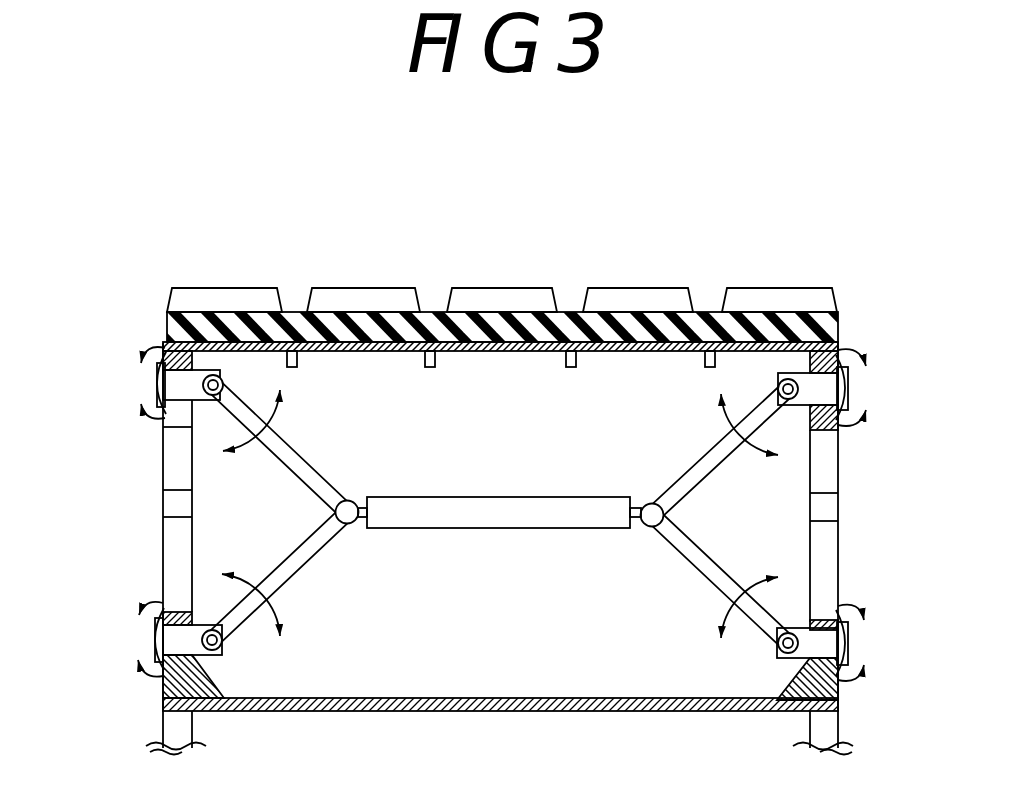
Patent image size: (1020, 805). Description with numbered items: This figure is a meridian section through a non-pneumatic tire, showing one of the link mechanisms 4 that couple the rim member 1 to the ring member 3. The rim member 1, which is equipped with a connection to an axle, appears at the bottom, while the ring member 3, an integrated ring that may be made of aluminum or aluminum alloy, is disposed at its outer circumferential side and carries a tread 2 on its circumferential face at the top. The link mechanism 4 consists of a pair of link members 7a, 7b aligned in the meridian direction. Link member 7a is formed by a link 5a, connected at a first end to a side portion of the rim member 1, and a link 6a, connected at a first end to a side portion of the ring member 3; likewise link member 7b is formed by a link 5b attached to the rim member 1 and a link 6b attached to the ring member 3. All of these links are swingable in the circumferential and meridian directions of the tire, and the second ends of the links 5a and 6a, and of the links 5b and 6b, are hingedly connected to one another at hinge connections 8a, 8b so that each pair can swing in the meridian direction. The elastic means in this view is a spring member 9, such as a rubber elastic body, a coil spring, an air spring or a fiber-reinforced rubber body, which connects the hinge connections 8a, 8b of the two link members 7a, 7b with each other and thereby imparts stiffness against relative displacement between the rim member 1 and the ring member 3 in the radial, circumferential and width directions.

The rim member 1 is at (162, 724).
The tread 2 is at (502, 294).
The ring member 3 is at (150, 387).
The link mechanism 4 is at (247, 458).
The link 5a is at (693, 558).
The link 5b is at (306, 556).
The link 6a is at (687, 485).
The link 6b is at (316, 476).
The link member 7a is at (688, 515).
The link member 7b is at (308, 512).
The hinge connection 8a is at (650, 528).
The hinge connection 8b is at (350, 516).
The spring member 9 is at (512, 530).